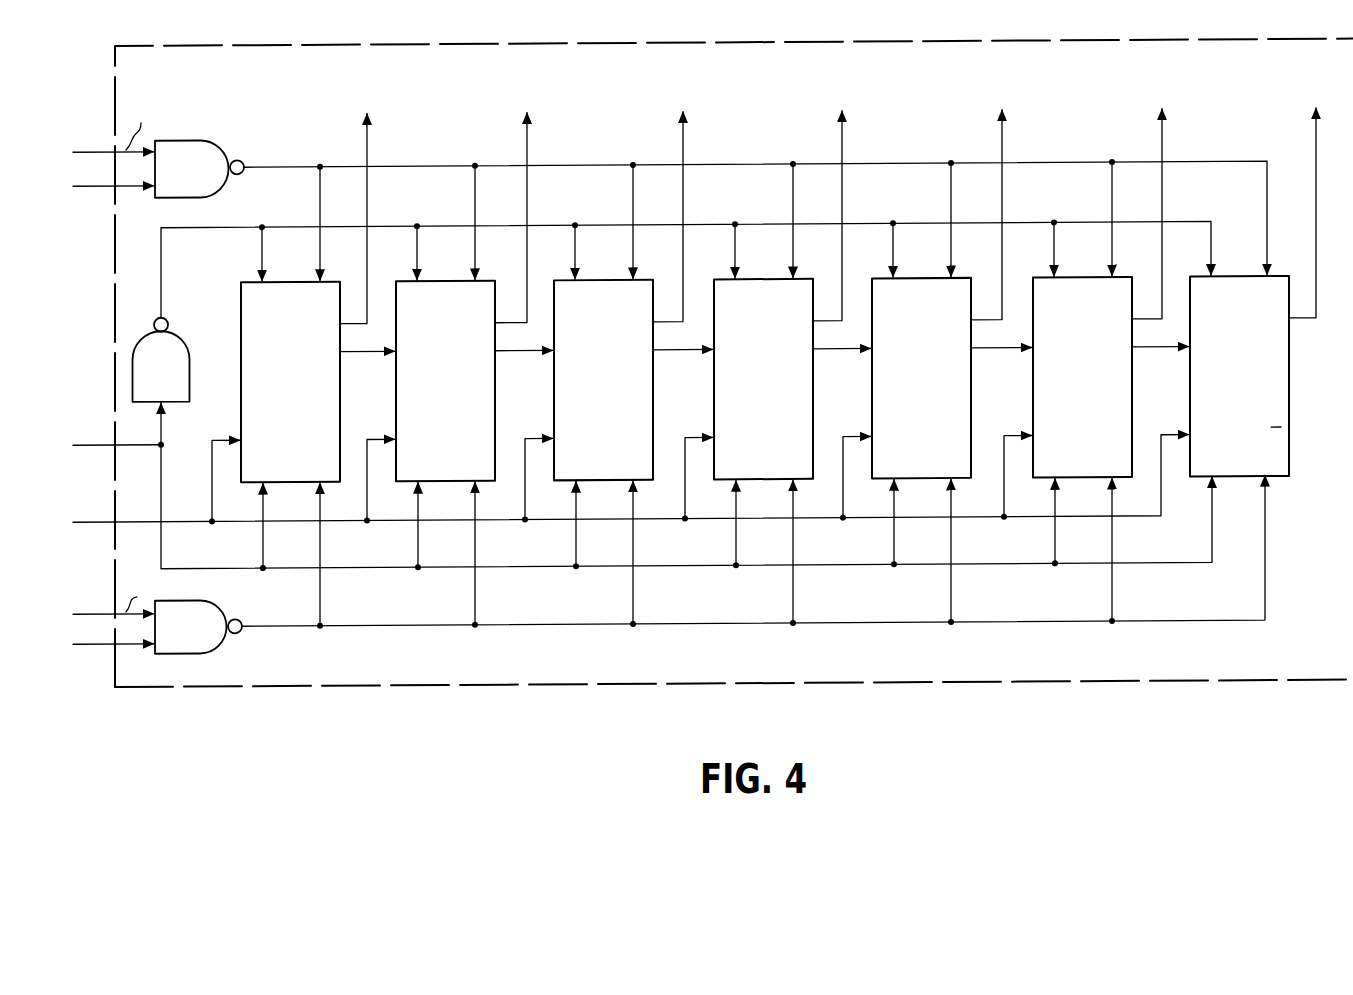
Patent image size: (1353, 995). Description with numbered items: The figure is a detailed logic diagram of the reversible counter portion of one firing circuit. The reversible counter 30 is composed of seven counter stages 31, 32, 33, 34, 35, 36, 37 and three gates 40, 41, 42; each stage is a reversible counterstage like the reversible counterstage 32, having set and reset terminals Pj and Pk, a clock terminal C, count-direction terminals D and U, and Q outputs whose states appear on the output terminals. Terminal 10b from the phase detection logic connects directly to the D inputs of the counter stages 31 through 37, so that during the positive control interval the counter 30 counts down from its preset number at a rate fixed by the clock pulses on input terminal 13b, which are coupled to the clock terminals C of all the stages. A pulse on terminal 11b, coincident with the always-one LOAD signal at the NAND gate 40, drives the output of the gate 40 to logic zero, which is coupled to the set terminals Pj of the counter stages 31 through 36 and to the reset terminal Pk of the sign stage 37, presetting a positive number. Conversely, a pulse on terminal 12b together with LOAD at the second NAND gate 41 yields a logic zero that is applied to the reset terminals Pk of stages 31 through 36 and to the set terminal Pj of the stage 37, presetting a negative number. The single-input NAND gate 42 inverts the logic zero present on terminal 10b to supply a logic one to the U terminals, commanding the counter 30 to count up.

The reversible counter 30 is at (263, 43).
The counter stage 31 is at (241, 323).
The reversible counterstage 32 is at (396, 400).
The counter stage 33 is at (554, 399).
The counter stage 34 is at (714, 399).
The counter stage 35 is at (872, 399).
The counter stage 36 is at (1033, 399).
The counter stage 37 is at (1190, 394).
The NAND gate 40 is at (222, 146).
The NAND gate 41 is at (216, 612).
The NAND gate 42 is at (153, 327).
The terminal 10b is at (642, 491).
The terminal 11b is at (92, 187).
The terminal 12b is at (98, 645).
The input terminal 13b is at (86, 523).